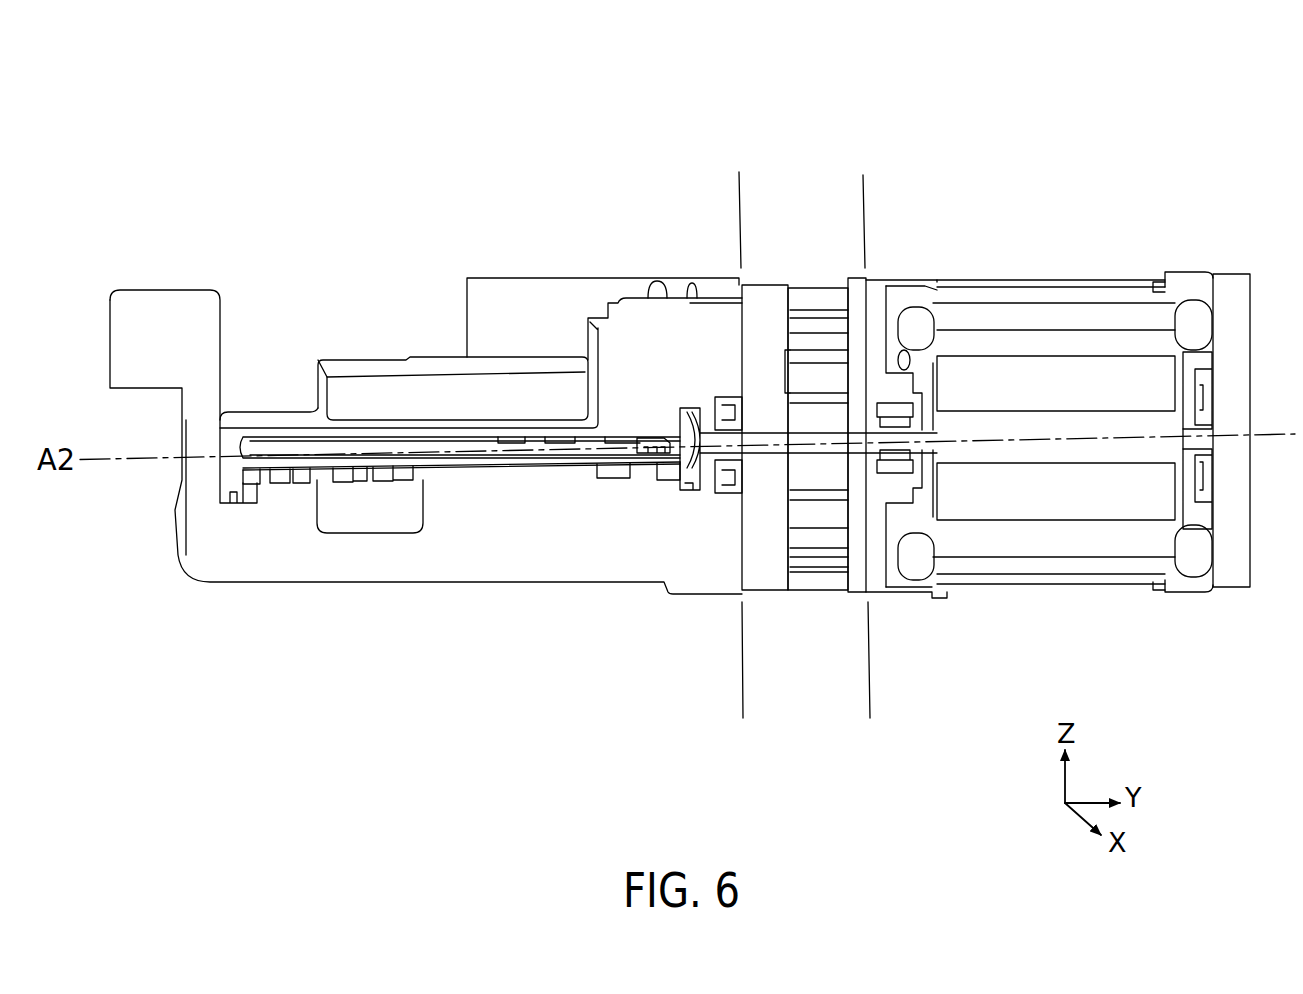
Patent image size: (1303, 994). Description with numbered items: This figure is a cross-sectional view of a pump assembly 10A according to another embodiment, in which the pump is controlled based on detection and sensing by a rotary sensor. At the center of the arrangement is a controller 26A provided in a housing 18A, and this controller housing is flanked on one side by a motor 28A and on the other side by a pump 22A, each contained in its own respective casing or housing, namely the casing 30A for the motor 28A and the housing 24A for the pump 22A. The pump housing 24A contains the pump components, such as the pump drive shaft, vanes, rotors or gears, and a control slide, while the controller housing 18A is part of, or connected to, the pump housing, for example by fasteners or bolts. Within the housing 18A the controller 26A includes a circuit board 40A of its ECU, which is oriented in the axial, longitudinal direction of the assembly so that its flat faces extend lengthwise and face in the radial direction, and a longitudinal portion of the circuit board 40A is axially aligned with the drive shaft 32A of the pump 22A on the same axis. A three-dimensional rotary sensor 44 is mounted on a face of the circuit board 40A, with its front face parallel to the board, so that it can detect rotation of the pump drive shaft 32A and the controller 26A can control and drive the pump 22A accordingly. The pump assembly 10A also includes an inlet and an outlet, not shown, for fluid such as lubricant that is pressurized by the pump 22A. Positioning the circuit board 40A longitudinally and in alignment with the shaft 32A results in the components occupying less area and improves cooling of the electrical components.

The pump assembly 10A is at (235, 115).
The housing 18A is at (337, 343).
The pump 22A is at (792, 600).
The housing 24A is at (759, 275).
The controller 26A is at (463, 490).
The motor 28A is at (983, 602).
The casing 30A is at (1024, 278).
The shaft 32A is at (767, 437).
The circuit board 40A is at (553, 460).
The 3D rotary sensor 44 is at (645, 435).